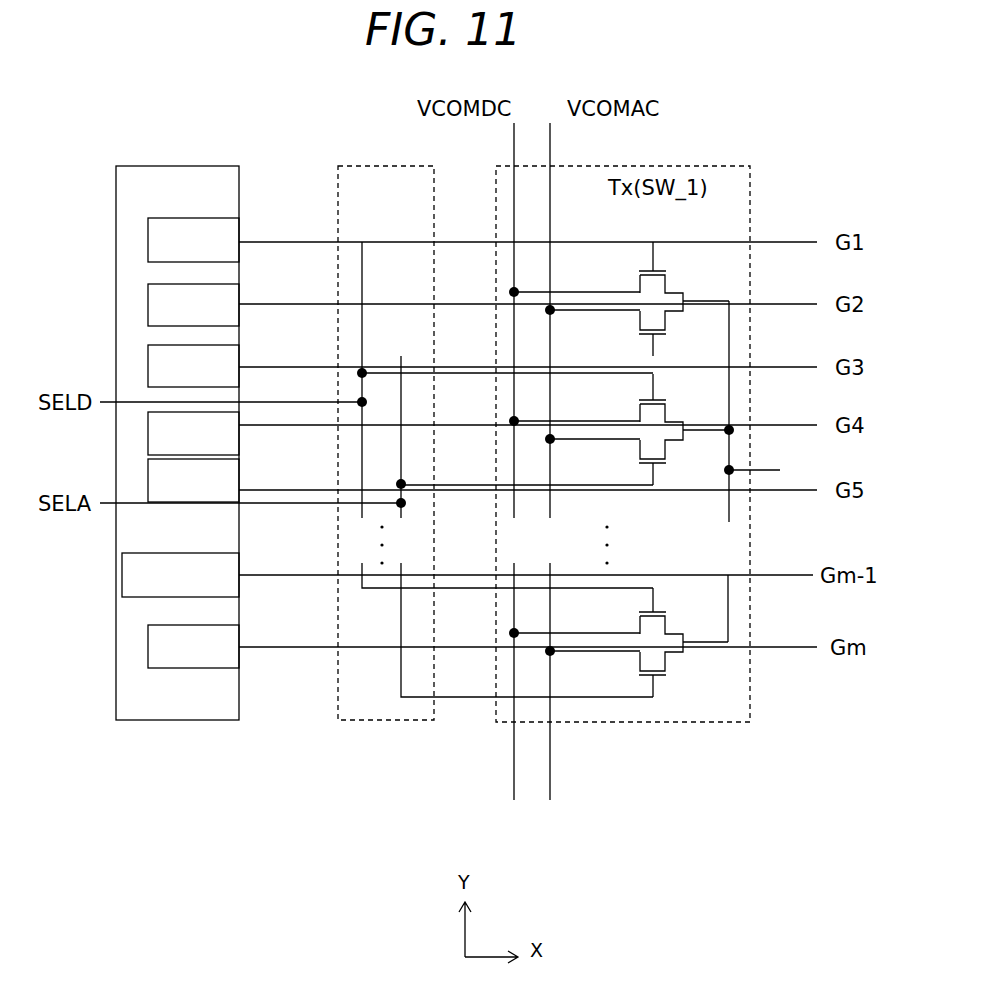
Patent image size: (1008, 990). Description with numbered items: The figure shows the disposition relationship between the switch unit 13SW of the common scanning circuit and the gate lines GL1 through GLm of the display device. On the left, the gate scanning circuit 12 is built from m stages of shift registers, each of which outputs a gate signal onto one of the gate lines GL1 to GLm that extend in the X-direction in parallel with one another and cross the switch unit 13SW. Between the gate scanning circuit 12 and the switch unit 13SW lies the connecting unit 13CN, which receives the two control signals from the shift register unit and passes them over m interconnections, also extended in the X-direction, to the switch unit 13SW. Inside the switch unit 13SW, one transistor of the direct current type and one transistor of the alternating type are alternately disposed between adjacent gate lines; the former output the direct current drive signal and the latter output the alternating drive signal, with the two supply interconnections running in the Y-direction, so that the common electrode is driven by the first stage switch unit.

The gate scanning circuit 12 is at (182, 166).
The connecting unit 13CN is at (356, 166).
The switch unit 13SW is at (710, 166).
The gate line GL1 is at (778, 241).
The gate line GLm is at (777, 650).